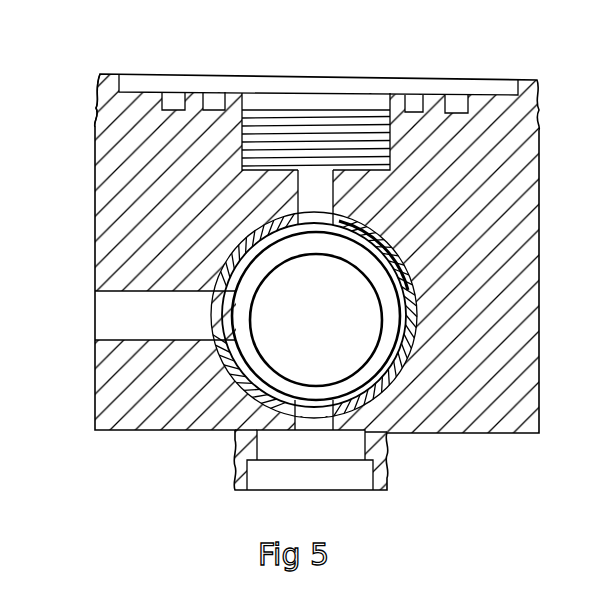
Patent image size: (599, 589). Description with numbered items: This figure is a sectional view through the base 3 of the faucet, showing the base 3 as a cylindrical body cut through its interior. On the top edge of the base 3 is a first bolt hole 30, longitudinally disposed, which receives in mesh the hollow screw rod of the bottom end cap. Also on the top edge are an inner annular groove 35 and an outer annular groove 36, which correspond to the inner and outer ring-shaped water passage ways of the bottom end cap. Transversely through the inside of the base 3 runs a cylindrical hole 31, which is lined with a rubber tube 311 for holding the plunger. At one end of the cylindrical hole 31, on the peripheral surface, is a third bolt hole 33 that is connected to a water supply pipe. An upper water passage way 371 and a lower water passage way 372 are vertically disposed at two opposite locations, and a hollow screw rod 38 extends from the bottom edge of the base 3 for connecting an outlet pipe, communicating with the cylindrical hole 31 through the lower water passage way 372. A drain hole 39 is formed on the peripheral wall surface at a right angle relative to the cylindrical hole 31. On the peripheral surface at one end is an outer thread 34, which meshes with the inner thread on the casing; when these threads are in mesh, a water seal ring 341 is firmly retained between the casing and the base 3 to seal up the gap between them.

The base 3 is at (546, 202).
The outer thread 34 is at (100, 76).
The water seal ring 341 is at (97, 93).
The outer annular groove 36 is at (171, 100).
The inner annular groove 35 is at (215, 100).
The first bolt hole 30 is at (252, 100).
The upper water passage way 371 is at (311, 215).
The lower water passage way 372 is at (318, 420).
The drain hole 39 is at (112, 318).
The third bolt hole 33 is at (277, 357).
The cylindrical hole 31 is at (378, 367).
The rubber tube 311 is at (403, 363).
The hollow screw rod 38 is at (235, 478).